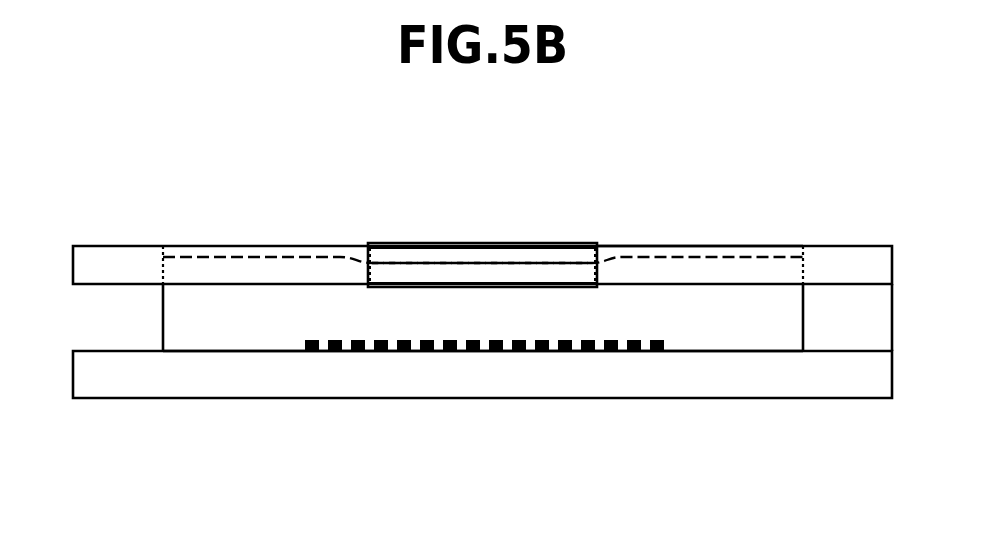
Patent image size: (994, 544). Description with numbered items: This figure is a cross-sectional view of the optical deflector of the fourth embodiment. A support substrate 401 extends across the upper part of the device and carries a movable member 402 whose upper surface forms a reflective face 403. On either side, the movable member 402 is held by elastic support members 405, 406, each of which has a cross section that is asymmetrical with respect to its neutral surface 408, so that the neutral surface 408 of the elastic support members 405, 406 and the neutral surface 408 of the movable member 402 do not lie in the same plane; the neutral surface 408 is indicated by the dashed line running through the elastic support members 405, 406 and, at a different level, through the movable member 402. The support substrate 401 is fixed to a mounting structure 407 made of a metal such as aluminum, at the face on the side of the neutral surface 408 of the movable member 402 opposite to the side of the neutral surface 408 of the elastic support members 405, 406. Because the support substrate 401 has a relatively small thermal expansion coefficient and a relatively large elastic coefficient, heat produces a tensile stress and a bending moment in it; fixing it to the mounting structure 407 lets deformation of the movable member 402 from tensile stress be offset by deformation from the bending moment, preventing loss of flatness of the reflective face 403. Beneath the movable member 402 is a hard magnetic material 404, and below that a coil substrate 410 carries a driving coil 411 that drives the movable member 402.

The support substrate 401 is at (838, 265).
The movable member 402 is at (520, 263).
The reflective face 403 is at (442, 243).
The hard magnetic material 404 is at (527, 285).
The elastic support member 405 is at (223, 246).
The elastic support member 406 is at (672, 246).
The mounting structure 407 is at (847, 312).
The neutral surface 408 is at (297, 246).
The coil substrate 410 is at (317, 372).
The driving coil 411 is at (656, 351).